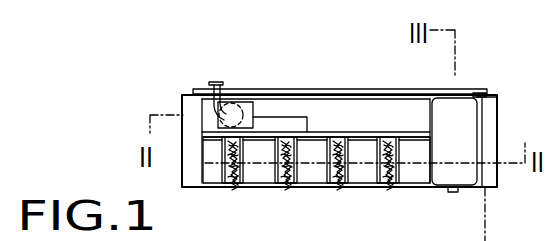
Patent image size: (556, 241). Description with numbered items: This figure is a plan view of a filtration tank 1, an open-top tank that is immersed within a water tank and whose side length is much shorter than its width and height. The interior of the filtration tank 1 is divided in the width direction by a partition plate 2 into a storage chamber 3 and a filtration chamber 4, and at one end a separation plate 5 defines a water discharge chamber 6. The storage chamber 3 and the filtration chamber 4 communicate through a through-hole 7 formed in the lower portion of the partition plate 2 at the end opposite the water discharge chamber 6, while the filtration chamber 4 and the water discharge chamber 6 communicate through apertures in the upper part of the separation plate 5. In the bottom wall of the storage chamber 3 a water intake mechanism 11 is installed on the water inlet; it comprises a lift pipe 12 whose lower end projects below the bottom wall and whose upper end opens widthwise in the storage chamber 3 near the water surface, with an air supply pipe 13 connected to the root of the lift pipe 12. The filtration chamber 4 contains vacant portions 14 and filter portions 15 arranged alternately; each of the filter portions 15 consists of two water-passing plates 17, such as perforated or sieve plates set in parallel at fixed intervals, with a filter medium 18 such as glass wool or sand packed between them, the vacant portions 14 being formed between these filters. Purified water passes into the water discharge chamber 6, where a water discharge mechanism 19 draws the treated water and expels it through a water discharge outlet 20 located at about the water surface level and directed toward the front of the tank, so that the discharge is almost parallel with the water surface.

The filtration tank 1 is at (332, 92).
The partition plate 2 is at (384, 135).
The storage chamber 3 is at (349, 115).
The filtration chamber 4 is at (307, 172).
The separation plate 5 is at (425, 108).
The water discharge chamber 6 is at (454, 104).
The through-hole 7 is at (202, 150).
The water intake mechanism 11 is at (237, 104).
The lift pipe 12 is at (248, 108).
The air supply pipe 13 is at (213, 83).
The vacant portions 14 is at (252, 173).
The filter portions 15 is at (283, 178).
The water-passing plates 17 is at (274, 172).
The filter medium 18 is at (281, 172).
The water discharge mechanism 19 is at (477, 96).
The water discharge outlet 20 is at (453, 192).